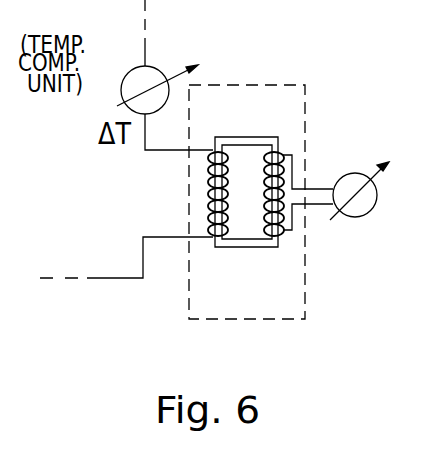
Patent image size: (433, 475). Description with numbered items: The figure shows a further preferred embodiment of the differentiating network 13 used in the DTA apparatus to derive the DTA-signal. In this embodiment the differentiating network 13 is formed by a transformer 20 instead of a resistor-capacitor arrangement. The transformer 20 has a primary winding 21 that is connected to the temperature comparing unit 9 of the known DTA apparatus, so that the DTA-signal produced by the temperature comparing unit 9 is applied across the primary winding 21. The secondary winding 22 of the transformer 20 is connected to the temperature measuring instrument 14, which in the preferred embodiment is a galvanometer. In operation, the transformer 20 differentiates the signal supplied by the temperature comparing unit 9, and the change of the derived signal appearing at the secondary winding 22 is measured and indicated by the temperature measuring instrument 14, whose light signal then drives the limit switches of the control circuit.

The temperature comparing unit 9 is at (137, 77).
The differentiating network 13 is at (207, 304).
The temperature measuring instrument 14 is at (357, 208).
The transformer 20 is at (246, 225).
The primary winding 21 is at (212, 192).
The secondary winding 22 is at (282, 163).